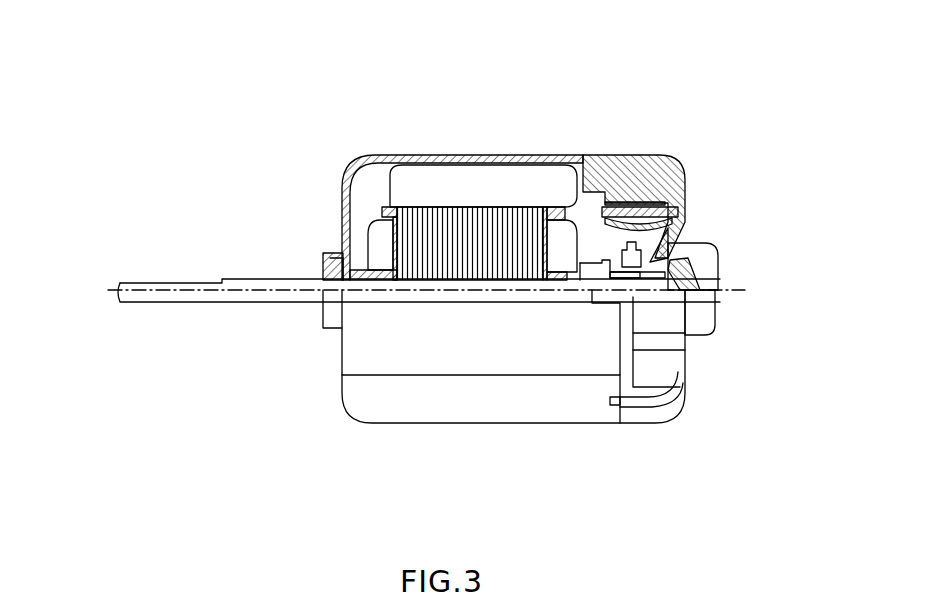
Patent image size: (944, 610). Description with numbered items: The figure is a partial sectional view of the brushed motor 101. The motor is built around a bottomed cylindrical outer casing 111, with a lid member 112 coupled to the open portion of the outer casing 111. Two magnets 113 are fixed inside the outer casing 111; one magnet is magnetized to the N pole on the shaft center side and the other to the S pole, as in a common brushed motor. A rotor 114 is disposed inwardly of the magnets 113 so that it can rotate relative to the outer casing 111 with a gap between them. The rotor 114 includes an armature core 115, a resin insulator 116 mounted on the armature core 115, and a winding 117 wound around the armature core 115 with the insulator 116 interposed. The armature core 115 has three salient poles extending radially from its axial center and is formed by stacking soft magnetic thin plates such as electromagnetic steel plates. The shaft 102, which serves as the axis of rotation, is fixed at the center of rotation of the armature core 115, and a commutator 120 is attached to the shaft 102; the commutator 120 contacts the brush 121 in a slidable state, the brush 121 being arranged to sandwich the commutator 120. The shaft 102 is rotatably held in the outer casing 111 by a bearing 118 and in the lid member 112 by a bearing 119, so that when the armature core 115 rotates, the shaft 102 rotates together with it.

The brushed motor 101 is at (470, 432).
The shaft 102 is at (283, 303).
The outer casing 111 is at (545, 158).
The lid member 112 is at (658, 176).
The magnets 113 is at (563, 183).
The rotor 114 is at (540, 78).
The armature core 115 is at (455, 217).
The insulator 116 is at (380, 238).
The winding 117 is at (357, 268).
The bearing 118 is at (323, 265).
The bearing 119 is at (720, 257).
The commutator 120 is at (633, 284).
The brush 121 is at (680, 254).